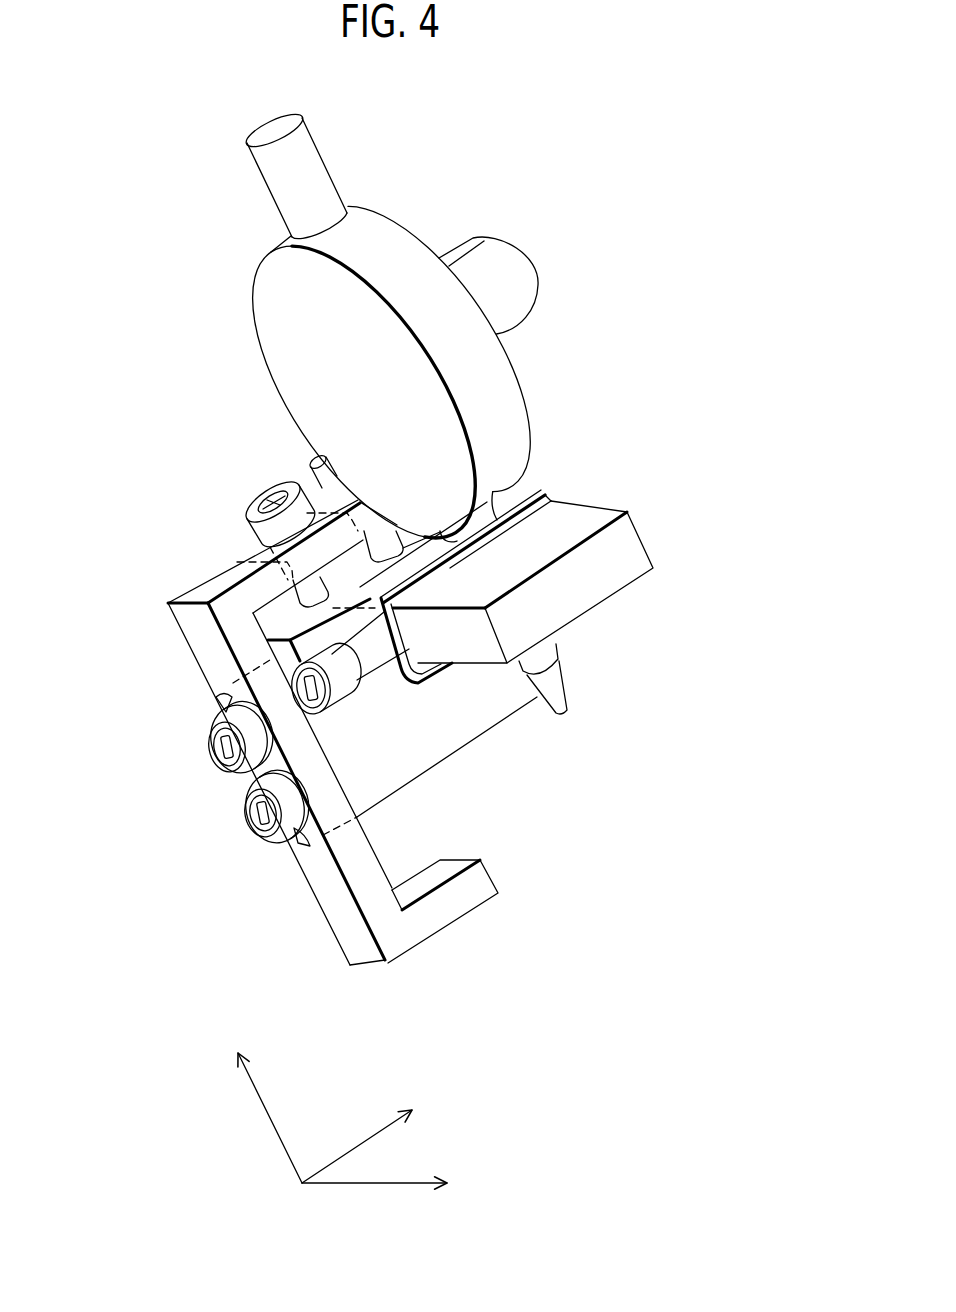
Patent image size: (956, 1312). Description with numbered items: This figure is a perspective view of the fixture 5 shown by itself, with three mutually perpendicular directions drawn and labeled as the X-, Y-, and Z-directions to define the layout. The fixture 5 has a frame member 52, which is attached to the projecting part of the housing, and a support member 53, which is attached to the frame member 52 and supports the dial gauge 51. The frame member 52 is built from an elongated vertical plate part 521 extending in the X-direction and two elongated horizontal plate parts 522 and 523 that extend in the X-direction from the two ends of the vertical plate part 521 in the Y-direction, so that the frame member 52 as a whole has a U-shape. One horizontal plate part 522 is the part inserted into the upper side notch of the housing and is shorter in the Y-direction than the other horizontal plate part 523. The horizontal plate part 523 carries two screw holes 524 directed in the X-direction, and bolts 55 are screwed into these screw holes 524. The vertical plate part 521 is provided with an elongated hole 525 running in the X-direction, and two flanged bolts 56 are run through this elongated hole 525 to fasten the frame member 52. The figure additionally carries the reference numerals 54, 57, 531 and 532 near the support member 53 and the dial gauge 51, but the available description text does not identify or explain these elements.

The fixture 5 is at (642, 296).
The dial gauge 51 is at (385, 233).
The frame member 52 is at (305, 890).
The vertical plate part 521 is at (323, 928).
The horizontal plate part 522 is at (468, 914).
The horizontal plate part 523 is at (218, 578).
The screw holes 524 is at (307, 510).
The elongated hole 525 is at (230, 697).
The support member 53 is at (598, 503).
The probe tip 531 is at (518, 698).
The holder body 532 is at (641, 537).
The clamp plate 54 is at (523, 497).
The bolts 55 is at (317, 460).
The flanged bolts 56 is at (247, 823).
The screw 57 is at (363, 662).